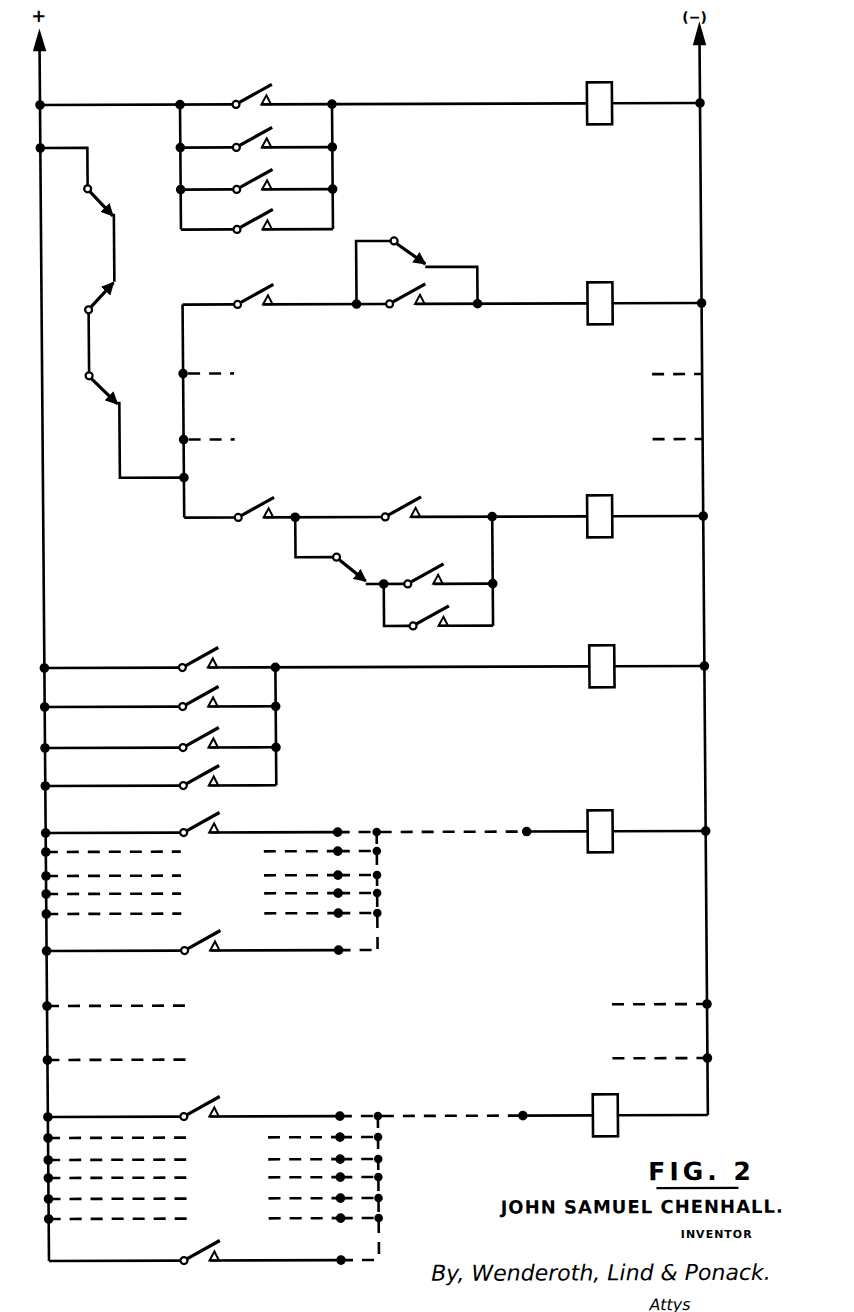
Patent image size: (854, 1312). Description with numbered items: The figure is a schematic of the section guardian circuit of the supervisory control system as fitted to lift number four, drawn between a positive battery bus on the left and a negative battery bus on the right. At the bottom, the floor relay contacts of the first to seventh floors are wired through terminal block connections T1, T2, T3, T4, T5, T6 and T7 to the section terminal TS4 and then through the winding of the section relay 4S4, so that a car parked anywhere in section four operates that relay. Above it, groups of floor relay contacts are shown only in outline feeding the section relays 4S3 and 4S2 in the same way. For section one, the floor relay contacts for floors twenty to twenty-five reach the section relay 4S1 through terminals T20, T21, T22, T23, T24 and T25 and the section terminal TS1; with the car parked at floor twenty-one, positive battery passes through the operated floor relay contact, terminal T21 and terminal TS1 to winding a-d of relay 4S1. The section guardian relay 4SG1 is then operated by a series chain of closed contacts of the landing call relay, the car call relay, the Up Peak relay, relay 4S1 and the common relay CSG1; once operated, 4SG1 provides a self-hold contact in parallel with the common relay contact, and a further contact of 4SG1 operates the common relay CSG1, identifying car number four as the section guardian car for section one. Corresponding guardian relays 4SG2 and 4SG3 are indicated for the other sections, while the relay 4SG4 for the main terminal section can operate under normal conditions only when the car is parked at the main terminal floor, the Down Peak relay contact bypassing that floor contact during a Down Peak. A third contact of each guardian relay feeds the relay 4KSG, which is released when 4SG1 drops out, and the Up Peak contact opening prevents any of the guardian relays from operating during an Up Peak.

The common section guardian relay CSG1 is at (597, 91).
The section guardian relay 4SG1 is at (597, 290).
The section guardian relay 4SG2 is at (639, 366).
The section guardian relay 4SG3 is at (639, 431).
The section guardian relay 4SG4 is at (597, 504).
The relay 4KSG is at (599, 653).
The terminal block connection T25 is at (327, 825).
The terminal block connection T24 is at (211, 845).
The terminal block connection T23 is at (211, 869).
The terminal block connection T22 is at (212, 887).
The terminal block connection T21 is at (212, 908).
The terminal block connection T20 is at (327, 943).
The terminal TS1 is at (521, 824).
The section relay 4S1 is at (597, 819).
The section relay 4S2 is at (657, 995).
The section relay 4S3 is at (657, 1050).
The terminal block connection T7 is at (331, 1109).
The terminal block connection T6 is at (212, 1131).
The terminal block connection T5 is at (213, 1153).
The terminal block connection T4 is at (213, 1172).
The terminal block connection T3 is at (213, 1193).
The terminal block connection T2 is at (213, 1212).
The terminal block connection T1 is at (334, 1251).
The terminal TS4 is at (525, 1108).
The section relay 4S4 is at (602, 1101).